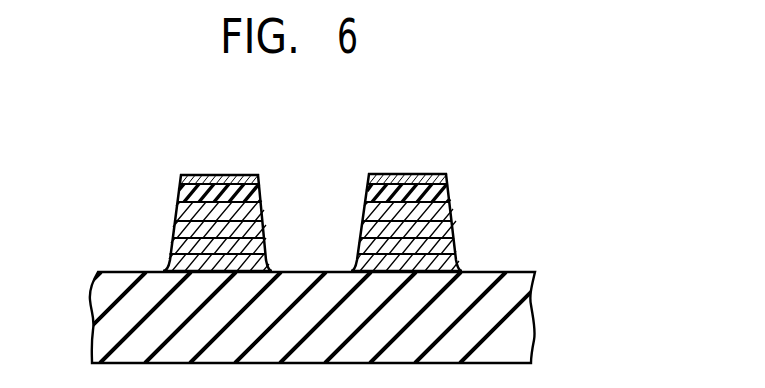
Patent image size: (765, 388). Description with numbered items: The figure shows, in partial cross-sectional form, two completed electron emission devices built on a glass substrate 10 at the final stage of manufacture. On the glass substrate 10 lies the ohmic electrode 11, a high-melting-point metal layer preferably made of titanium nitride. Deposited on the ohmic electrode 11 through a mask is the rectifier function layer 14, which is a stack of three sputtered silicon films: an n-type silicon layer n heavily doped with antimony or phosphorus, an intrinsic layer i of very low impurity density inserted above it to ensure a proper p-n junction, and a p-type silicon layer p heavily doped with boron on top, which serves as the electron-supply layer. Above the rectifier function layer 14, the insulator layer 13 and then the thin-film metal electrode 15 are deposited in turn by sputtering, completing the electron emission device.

The glass substrate 10 is at (492, 315).
The ohmic electrode 11 is at (452, 258).
The insulator layer 13 is at (447, 192).
The rectifier function layer 14 is at (384, 199).
The thin-film metal electrode 15 is at (408, 175).
The p-type silicon layer p is at (450, 212).
The intrinsic layer i is at (449, 229).
The n-type silicon layer n is at (360, 235).